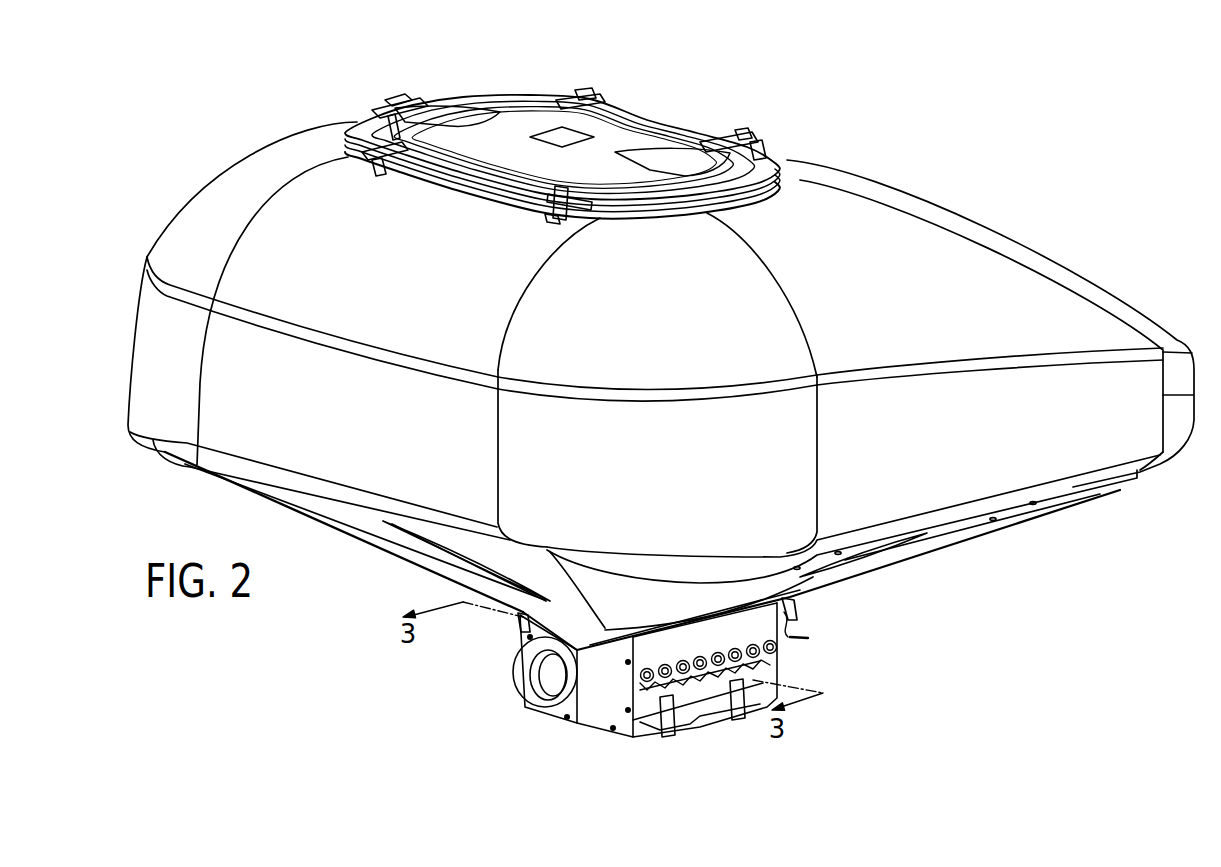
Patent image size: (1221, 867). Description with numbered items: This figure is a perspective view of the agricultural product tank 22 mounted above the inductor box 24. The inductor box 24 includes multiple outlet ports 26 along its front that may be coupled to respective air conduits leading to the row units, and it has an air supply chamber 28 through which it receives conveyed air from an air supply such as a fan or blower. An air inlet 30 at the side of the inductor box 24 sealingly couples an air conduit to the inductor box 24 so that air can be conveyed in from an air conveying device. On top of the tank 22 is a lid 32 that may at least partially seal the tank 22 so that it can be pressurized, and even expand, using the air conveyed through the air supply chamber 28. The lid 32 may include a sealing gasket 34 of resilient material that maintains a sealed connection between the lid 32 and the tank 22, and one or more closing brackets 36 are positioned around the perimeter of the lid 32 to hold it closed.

The agricultural product tank 22 is at (950, 212).
The inductor box 24 is at (602, 718).
The outlet ports 26 is at (785, 640).
The air supply chamber 28 is at (538, 705).
The air inlet 30 is at (513, 668).
The lid 32 is at (650, 218).
The sealing gasket 34 is at (343, 133).
The closing brackets 36 is at (415, 97).